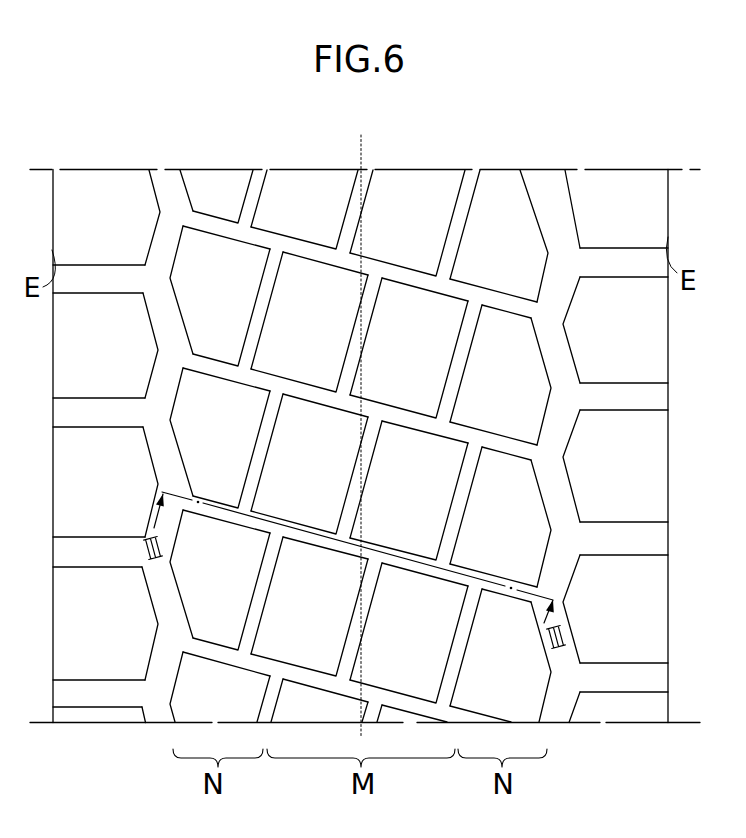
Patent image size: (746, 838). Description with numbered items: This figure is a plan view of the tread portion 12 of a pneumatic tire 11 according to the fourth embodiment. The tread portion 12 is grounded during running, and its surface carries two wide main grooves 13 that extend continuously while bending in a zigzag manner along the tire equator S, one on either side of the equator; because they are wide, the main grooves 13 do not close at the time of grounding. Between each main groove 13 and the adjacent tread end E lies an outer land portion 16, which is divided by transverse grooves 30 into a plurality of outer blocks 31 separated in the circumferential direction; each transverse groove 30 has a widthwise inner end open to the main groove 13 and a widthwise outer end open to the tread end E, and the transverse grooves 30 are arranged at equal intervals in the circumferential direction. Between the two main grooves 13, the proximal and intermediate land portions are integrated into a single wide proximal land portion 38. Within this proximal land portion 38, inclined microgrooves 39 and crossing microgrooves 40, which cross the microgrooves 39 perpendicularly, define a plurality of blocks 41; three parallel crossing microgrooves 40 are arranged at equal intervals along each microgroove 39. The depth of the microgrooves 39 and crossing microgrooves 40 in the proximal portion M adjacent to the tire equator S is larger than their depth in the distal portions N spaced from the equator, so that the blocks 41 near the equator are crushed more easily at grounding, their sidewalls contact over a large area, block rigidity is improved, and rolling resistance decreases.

The pneumatic tire 11 is at (443, 153).
The tread portion 12 is at (349, 154).
The main groove 13 is at (168, 181).
The outer land portion 16 is at (116, 158).
The transverse groove 30 is at (95, 417).
The outer block 31 is at (87, 518).
The proximal land portion 38 is at (405, 162).
The microgroove 39 is at (412, 277).
The crossing microgroove 40 is at (260, 302).
The block 41 is at (247, 398).